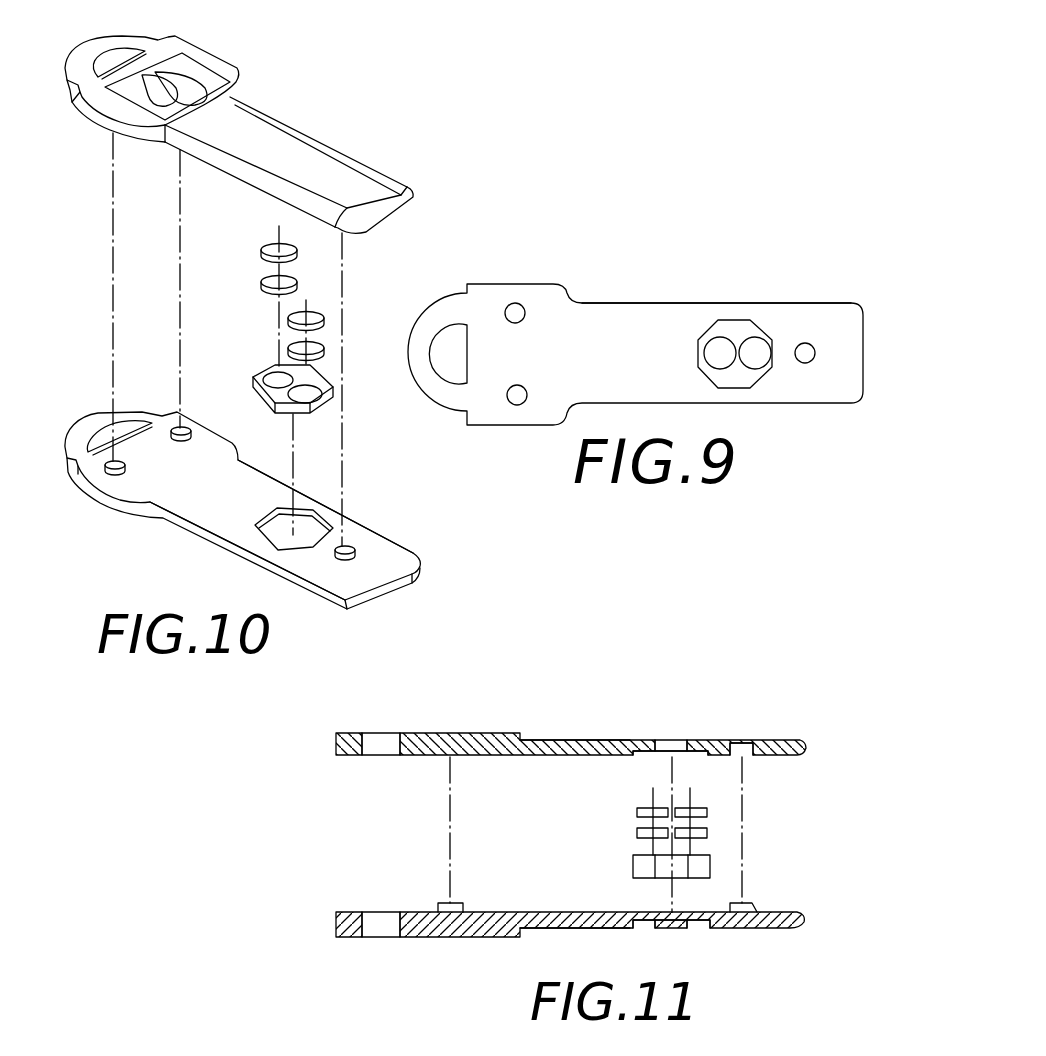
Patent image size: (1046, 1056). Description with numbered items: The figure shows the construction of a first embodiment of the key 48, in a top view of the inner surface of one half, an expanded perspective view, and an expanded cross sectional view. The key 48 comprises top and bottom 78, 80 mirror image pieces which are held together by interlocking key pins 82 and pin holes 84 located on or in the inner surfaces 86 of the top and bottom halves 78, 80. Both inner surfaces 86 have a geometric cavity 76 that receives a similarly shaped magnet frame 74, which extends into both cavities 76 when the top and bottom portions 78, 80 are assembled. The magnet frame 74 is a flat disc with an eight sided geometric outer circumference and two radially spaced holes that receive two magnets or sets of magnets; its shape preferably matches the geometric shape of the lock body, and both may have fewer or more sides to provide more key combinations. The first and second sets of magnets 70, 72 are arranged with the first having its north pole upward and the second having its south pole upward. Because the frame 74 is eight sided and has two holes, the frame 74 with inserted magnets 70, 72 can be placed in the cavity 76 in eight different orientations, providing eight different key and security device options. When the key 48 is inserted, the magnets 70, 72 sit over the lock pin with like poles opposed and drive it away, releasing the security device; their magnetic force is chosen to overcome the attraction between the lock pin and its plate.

In FIG. 10, the key 48 is at (280, 134).
In FIG. 9, the key 48 is at (644, 362).
In FIG. 10, the first set of magnets 70 is at (262, 242).
In FIG. 9, the first set of magnets 70 is at (722, 347).
In FIG. 11, the first set of magnets 70 is at (636, 805).
In FIG. 10, the second set of magnets 72 is at (322, 313).
In FIG. 9, the second set of magnets 72 is at (758, 355).
In FIG. 11, the second set of magnets 72 is at (706, 805).
In FIG. 10, the magnet frame 74 is at (324, 382).
In FIG. 9, the magnet frame 74 is at (718, 378).
In FIG. 11, the magnet frame 74 is at (710, 862).
In FIG. 10, the geometric cavity 76 is at (307, 528).
In FIG. 11, the geometric cavity 76 is at (703, 748).
In FIG. 10, the top piece 78 is at (397, 203).
In FIG. 11, the top piece 78 is at (582, 738).
In FIG. 9, the bottom piece 80 is at (788, 405).
In FIG. 11, the bottom piece 80 is at (493, 923).
In FIG. 10, the key pins 82 is at (182, 439).
In FIG. 9, the key pins 82 is at (519, 392).
In FIG. 11, the key pins 82 is at (457, 902).
In FIG. 11, the pin holes 84 is at (743, 747).
In FIG. 10, the inner surfaces 86 is at (287, 470).
In FIG. 9, the inner surfaces 86 is at (627, 335).
In FIG. 11, the inner surfaces 86 is at (605, 757).